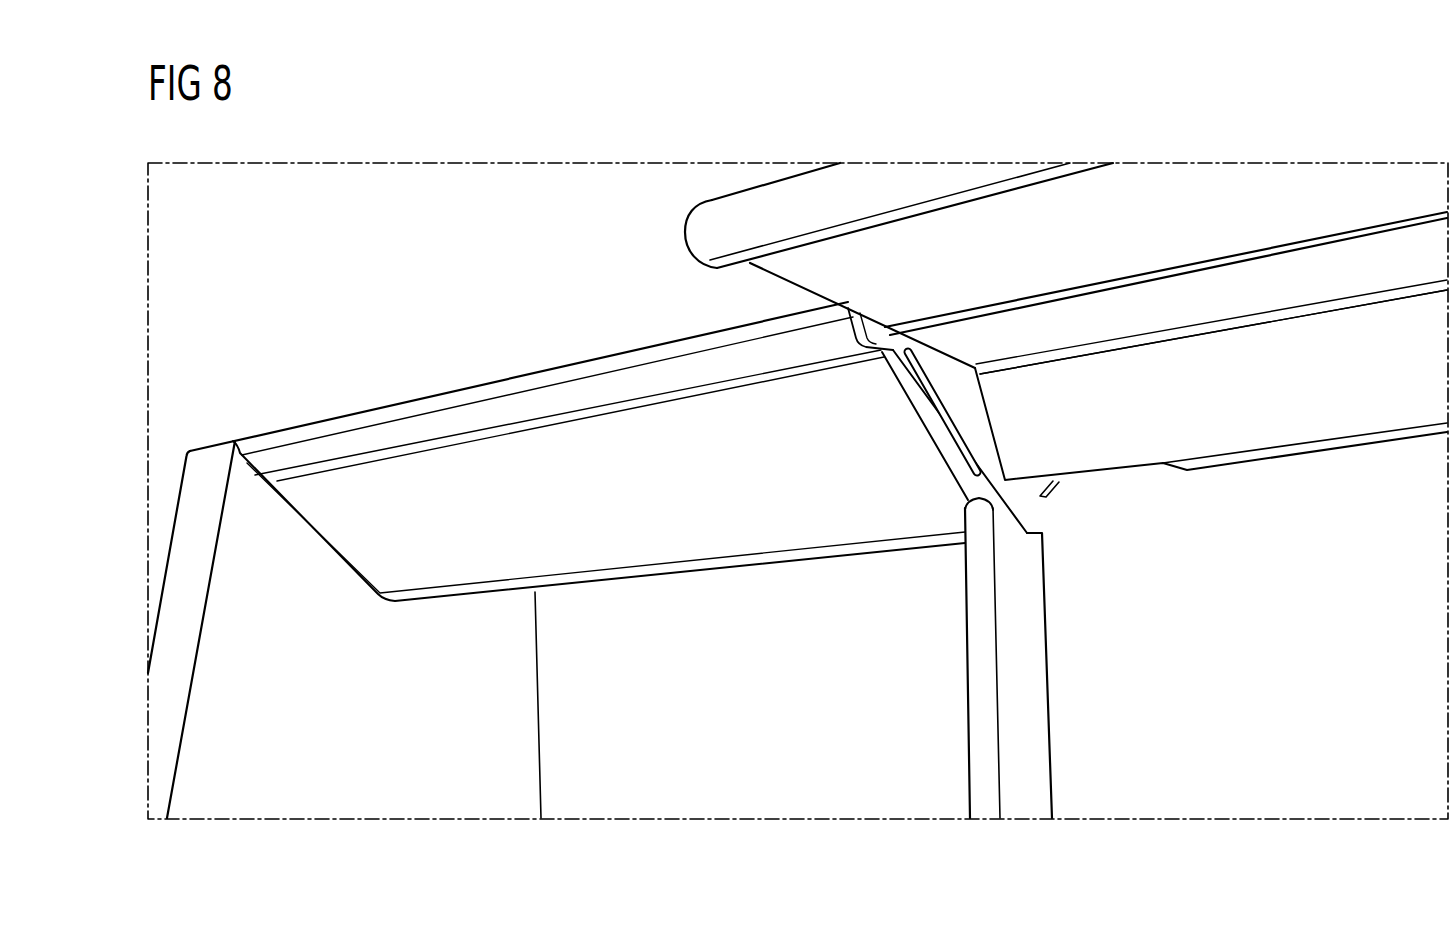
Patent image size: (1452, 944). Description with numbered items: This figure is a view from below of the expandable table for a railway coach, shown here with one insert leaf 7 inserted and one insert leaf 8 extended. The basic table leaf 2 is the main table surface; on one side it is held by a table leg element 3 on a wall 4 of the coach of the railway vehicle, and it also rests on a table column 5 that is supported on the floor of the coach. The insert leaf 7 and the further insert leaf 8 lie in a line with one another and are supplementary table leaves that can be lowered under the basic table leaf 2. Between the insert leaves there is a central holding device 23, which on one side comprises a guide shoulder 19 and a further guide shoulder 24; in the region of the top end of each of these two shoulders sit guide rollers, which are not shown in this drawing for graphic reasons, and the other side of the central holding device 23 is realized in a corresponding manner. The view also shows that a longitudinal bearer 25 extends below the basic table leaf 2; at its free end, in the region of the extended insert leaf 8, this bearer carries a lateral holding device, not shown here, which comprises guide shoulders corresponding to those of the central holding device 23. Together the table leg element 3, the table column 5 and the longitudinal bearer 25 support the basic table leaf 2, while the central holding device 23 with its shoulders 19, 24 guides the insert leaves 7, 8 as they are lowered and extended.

The basic table leaf 2 is at (1155, 298).
The table leg element 3 is at (182, 543).
The wall 4 is at (182, 398).
The table column 5 is at (980, 657).
The insert leaf 7 is at (532, 385).
The insert leaf 8 is at (884, 180).
The guide shoulder 19 is at (922, 384).
The central holding device 23 is at (934, 432).
The guide shoulder 24 is at (1056, 491).
The longitudinal bearer 25 is at (1096, 378).